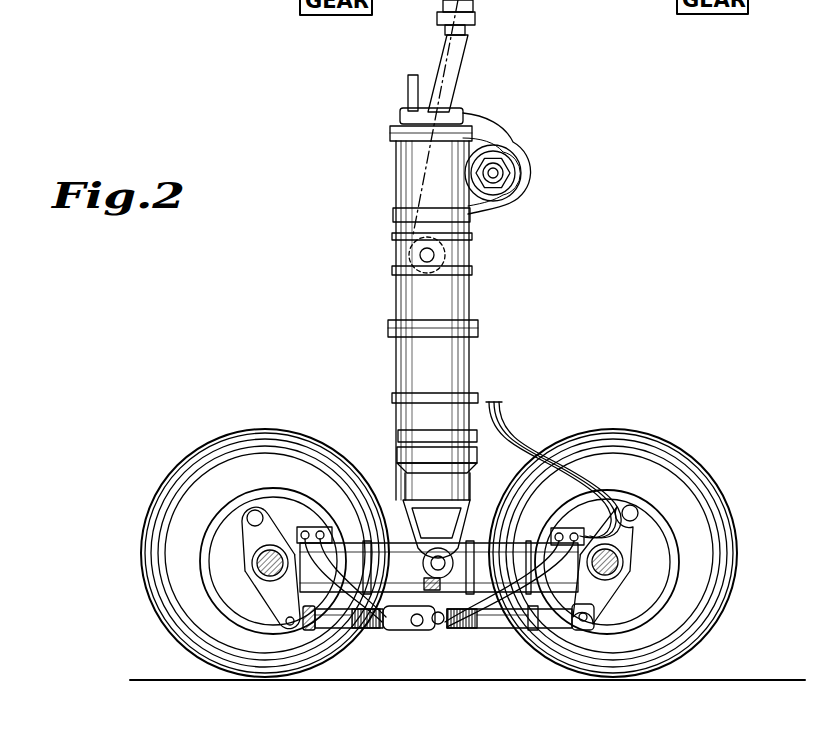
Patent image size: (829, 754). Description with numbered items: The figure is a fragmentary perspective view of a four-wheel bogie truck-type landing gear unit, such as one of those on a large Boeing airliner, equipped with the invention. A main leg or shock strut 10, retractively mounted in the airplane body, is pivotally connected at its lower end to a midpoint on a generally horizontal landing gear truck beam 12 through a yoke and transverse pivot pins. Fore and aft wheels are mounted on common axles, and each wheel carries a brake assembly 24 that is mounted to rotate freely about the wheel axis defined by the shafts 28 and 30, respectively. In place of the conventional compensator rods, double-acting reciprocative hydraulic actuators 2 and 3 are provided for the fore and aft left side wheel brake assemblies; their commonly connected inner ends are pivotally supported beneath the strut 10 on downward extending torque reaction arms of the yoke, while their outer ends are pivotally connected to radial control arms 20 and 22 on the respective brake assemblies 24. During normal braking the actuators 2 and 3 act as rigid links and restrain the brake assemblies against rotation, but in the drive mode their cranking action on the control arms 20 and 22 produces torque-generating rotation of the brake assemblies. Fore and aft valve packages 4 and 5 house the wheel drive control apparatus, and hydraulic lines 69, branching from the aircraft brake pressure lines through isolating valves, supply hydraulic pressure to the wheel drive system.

The actuator 2 is at (497, 631).
The actuator 3 is at (335, 632).
The fore valve package 4 is at (581, 531).
The aft valve package 5 is at (300, 527).
The shock strut 10 is at (381, 264).
The landing gear truck beam 12 is at (475, 520).
The radial control arm 20 is at (598, 602).
The radial control arm 22 is at (303, 603).
The brake assembly 24 is at (198, 565).
The shaft 28 is at (624, 562).
The shaft 30 is at (256, 562).
The hydraulic lines 69 is at (529, 431).